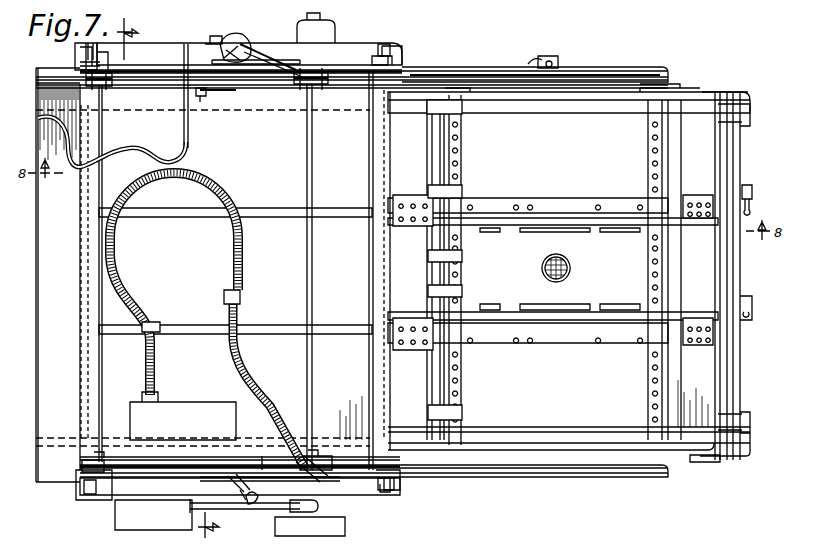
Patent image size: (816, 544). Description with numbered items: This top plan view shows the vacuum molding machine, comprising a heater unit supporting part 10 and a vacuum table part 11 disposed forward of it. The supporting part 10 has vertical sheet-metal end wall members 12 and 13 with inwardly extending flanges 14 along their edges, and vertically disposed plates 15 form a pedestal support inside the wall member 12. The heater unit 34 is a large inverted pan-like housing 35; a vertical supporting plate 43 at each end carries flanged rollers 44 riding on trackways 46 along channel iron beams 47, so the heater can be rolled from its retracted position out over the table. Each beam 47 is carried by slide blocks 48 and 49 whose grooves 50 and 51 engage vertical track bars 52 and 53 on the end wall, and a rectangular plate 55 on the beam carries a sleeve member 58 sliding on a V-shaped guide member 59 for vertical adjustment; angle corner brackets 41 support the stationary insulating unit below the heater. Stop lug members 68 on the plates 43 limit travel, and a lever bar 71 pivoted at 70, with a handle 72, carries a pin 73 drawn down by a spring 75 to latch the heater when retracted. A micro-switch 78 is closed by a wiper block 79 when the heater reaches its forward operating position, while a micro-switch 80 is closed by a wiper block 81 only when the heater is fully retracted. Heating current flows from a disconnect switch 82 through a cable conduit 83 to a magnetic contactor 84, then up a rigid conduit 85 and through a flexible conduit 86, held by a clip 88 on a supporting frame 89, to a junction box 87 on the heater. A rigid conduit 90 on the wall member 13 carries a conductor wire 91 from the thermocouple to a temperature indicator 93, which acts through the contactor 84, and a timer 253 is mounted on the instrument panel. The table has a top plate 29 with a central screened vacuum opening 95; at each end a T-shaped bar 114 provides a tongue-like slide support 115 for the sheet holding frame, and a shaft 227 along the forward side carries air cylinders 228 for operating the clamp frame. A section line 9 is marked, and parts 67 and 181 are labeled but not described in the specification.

The section line 9- 9 is at (161, 278).
The heater unit supporting part 10 is at (165, 34).
The vacuum table part 11 is at (476, 50).
The end wall member 12 is at (364, 496).
The end wall member 13 is at (350, 43).
The inwardly extending flanges 14 is at (75, 50).
The vertically disposed plates 15 is at (76, 478).
The rectangular top plate 29 is at (684, 462).
The heater unit 34 is at (31, 275).
The inverted pan-like housing 35 is at (46, 311).
The angle corner brackets 41 is at (38, 70).
The vertical supporting plate 43 is at (142, 85).
The flanged rollers 44 is at (110, 86).
The horizontal trackways 46 is at (490, 68).
The horizontal channel iron beams 47 is at (510, 68).
The slide block 48 is at (102, 52).
The slide block 49 is at (372, 61).
The vertical groove 50 is at (80, 62).
The vertical groove 51 is at (396, 62).
The vertical track bar 52 is at (90, 43).
The vertical track bar 53 is at (384, 46).
The rectangular plate 55 is at (272, 56).
The sleeve member 58 is at (260, 58).
The guide member 59 is at (250, 52).
The pivot 67 is at (232, 42).
The stop lug member 68 is at (94, 454).
The pivot point 70 is at (302, 94).
The elongated lever bar 71 is at (276, 96).
The handle 72 is at (518, 114).
The pin 73 is at (206, 92).
The spring 75 is at (200, 100).
The micro-switch 78 is at (552, 58).
The switch actuating wiper block 79 is at (226, 90).
The micro-switch 80 is at (290, 498).
The switch actuating wiper block 81 is at (264, 464).
The disconnect switch 82 is at (142, 520).
The cable conduit 83 is at (190, 508).
The automatic magnetic contactor 84 is at (346, 530).
The rigid conduit 85 is at (266, 402).
The flexible conduit 86 is at (120, 264).
The junction box 87 is at (192, 404).
The clip 88 is at (154, 322).
The supporting frame 89 is at (274, 324).
The rigid conduit 90 is at (188, 142).
The conductor wire 91 is at (128, 148).
The contact making temperature indicator 93 is at (210, 38).
The screened vacuum opening 95 is at (570, 274).
The transversely extending bar 114 is at (604, 100).
The tongue-like slide support 115 is at (598, 113).
The cross beam 181 is at (481, 188).
The shaft 227 is at (740, 158).
The air cylinders 228 is at (750, 114).
The timer 253 is at (330, 26).